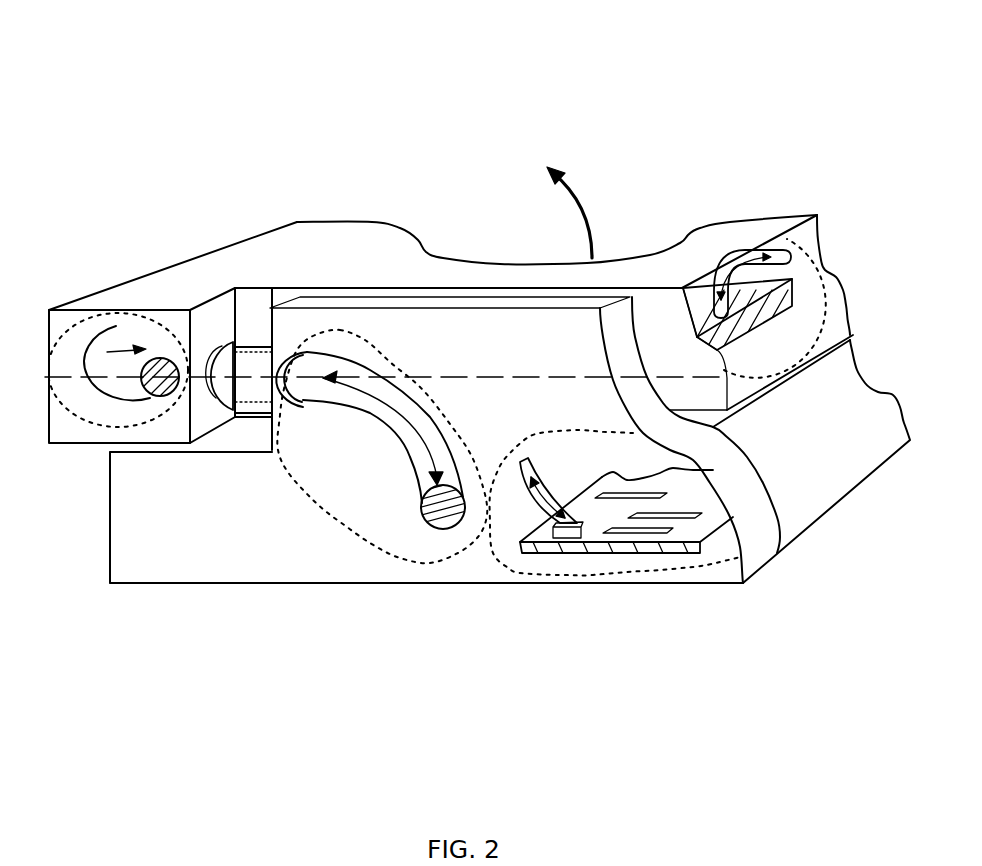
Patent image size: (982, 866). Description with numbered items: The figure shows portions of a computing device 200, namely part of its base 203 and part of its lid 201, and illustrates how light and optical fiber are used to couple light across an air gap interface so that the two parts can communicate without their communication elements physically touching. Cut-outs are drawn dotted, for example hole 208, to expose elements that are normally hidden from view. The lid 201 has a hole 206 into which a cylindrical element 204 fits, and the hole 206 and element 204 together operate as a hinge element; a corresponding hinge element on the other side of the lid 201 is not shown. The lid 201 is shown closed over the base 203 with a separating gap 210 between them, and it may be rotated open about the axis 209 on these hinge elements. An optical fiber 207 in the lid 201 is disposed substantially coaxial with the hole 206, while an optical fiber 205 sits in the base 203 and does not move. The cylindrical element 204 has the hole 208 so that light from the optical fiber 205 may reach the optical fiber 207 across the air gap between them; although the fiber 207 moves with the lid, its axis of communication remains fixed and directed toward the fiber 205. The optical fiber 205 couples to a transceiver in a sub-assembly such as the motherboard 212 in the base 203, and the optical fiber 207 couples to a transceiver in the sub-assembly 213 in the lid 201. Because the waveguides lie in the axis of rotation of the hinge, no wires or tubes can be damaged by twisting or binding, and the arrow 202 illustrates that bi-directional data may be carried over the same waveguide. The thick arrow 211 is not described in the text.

The computing device 200 is at (426, 102).
The lid 201 is at (385, 223).
The arrow 202 is at (385, 400).
The base 203 is at (267, 580).
The cylindrical element 204 is at (256, 365).
The optical fiber 205 is at (370, 418).
The hole 206 is at (209, 390).
The optical fiber 207 is at (153, 360).
The hole 208 is at (448, 415).
The axis 209 is at (490, 370).
The separating gap 210 is at (812, 362).
The exhaust direction 211 is at (585, 203).
The motherboard 212 is at (650, 550).
The sub-assembly 213 is at (753, 318).